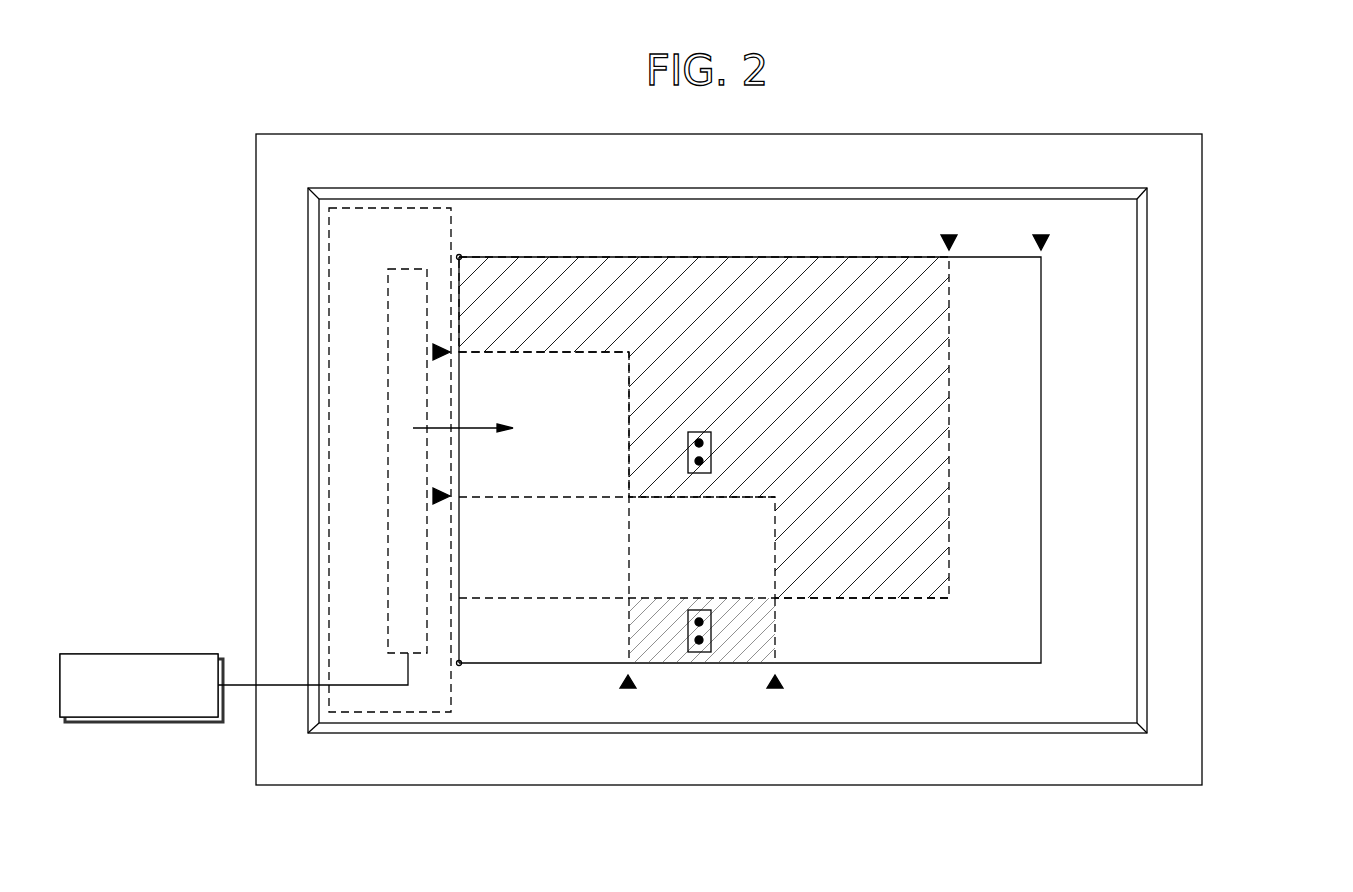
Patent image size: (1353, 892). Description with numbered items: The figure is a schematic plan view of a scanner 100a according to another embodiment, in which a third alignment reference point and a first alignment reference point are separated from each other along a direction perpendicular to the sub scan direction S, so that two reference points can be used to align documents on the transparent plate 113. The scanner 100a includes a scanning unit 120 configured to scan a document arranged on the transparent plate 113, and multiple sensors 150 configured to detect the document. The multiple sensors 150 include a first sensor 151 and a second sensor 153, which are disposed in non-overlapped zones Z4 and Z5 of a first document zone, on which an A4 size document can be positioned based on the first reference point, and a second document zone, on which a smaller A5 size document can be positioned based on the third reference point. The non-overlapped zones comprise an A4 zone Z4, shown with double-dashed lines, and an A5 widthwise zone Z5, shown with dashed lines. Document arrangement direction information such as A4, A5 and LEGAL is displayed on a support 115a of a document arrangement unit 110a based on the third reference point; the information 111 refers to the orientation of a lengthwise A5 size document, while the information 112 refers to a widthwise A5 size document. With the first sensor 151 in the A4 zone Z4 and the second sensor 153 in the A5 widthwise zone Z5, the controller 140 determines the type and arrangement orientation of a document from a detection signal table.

The scanner 100a is at (1222, 130).
The document arrangement unit 110a is at (1292, 588).
The document arrangement orientation information for lengthwise A5 document 111 is at (395, 352).
The document arrangement orientation information for widthwise A5 document 112 is at (395, 497).
The transparent plate 113 is at (995, 584).
The support 115a is at (1100, 668).
The scanning unit 120 is at (412, 279).
The controller 140 is at (137, 654).
The multiple sensors 150 is at (735, 653).
The first sensor 151 is at (703, 473).
The second sensor 153 is at (700, 652).
The A4 zone Z4 is at (575, 302).
The A5 widthwise zone Z5 is at (661, 628).
The sub scan direction S is at (492, 432).